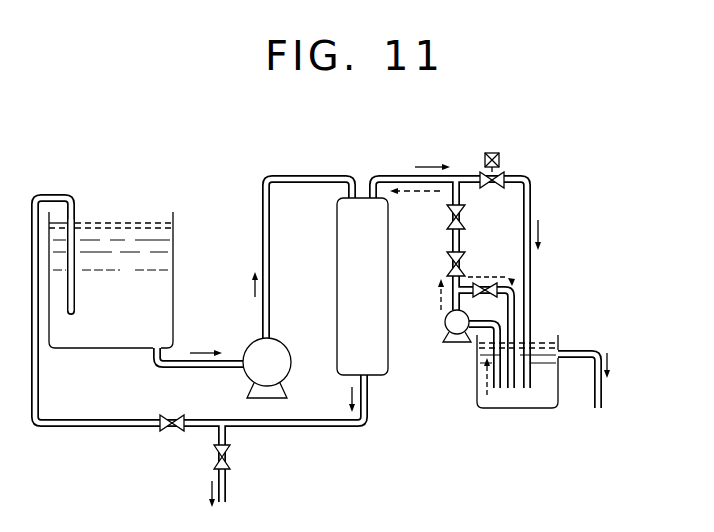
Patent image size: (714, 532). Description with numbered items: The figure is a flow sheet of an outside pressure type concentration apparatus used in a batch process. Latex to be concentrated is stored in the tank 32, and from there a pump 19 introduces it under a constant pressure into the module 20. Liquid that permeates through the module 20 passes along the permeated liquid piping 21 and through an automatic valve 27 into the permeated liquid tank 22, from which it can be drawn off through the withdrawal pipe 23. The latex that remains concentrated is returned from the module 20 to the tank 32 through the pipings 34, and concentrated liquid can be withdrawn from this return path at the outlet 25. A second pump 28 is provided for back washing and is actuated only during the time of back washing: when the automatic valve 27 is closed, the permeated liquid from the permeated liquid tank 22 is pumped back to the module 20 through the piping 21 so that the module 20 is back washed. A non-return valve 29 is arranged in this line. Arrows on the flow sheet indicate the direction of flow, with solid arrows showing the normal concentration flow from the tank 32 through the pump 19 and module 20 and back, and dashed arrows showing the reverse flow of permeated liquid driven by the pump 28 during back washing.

The pump 19 is at (286, 380).
The module 20 is at (335, 290).
The permeated liquid piping 21 is at (410, 176).
The permeated liquid tank 22 is at (517, 408).
The withdrawal pipe 23 is at (602, 385).
The outlet 25 is at (228, 488).
The automatic valve 27 is at (500, 158).
The pump 28 is at (451, 342).
The non-return valve 29 is at (466, 215).
The tank 32 is at (173, 268).
The pipings 34 is at (110, 428).